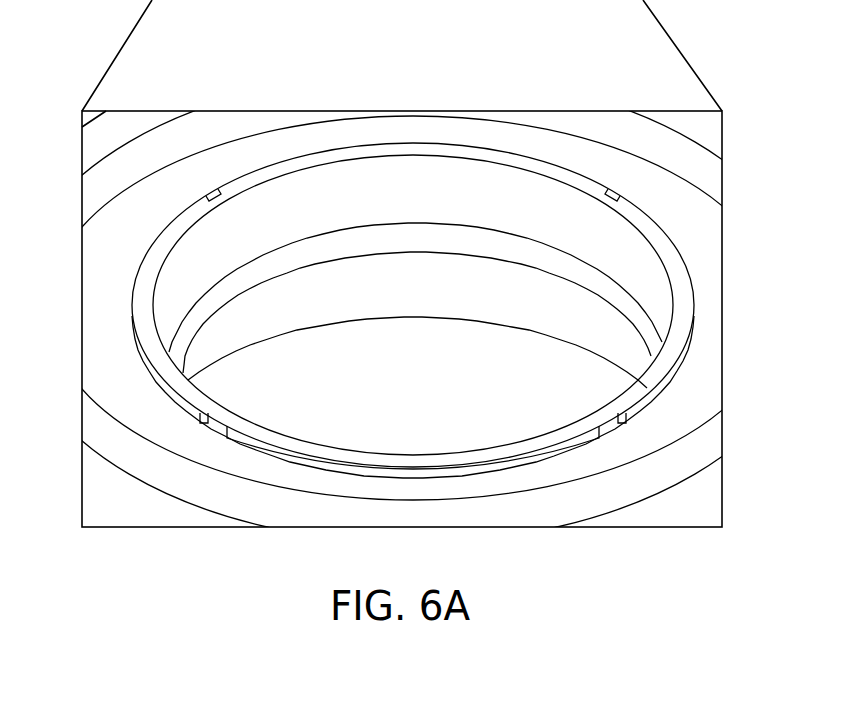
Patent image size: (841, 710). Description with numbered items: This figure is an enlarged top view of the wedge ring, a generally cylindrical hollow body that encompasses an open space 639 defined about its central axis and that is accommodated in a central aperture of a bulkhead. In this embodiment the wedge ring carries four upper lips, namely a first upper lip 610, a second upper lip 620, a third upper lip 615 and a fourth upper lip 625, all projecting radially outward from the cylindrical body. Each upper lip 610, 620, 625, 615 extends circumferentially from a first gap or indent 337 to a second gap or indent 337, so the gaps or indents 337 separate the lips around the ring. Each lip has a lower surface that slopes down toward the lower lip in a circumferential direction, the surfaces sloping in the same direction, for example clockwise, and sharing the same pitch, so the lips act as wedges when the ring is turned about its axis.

The gap or indent 337 is at (210, 190).
The first upper lip 610 is at (263, 433).
The fourth upper lip 615 is at (667, 354).
The second upper lip 620 is at (142, 277).
The fourth upper lip 625 is at (263, 172).
The open space 639 is at (411, 372).